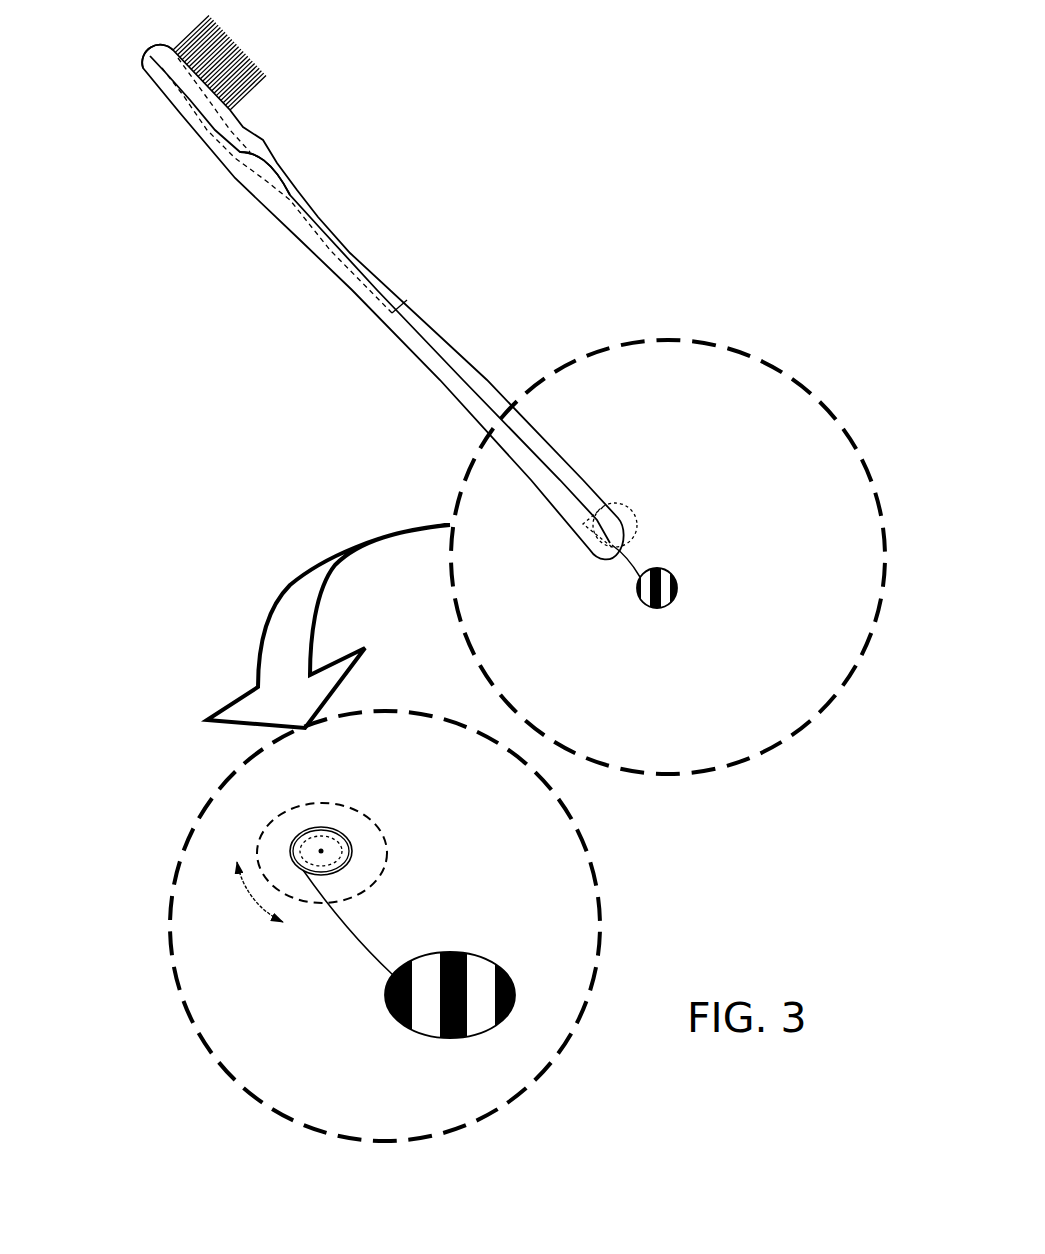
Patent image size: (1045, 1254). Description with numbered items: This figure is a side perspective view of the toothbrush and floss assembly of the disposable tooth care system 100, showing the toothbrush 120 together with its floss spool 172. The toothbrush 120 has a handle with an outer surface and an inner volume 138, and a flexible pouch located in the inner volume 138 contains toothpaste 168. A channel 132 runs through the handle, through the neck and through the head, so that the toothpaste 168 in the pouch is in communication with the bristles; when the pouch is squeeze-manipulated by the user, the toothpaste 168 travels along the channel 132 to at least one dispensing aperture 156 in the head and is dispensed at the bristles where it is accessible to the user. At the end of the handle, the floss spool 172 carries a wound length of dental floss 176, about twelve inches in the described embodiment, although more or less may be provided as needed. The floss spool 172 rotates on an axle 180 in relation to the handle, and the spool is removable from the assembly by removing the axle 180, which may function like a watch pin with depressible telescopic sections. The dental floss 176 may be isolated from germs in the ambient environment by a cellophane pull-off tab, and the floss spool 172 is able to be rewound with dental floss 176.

The disposable tooth care system 100 is at (623, 78).
The toothbrush 120 is at (413, 303).
The channel 132 is at (168, 82).
The inner volume 138 is at (325, 238).
The dispensing aperture 156 is at (180, 64).
The toothpaste 168 is at (292, 197).
The floss spool 172 is at (623, 512).
The dental floss 176 is at (368, 933).
The axle 180 is at (323, 848).